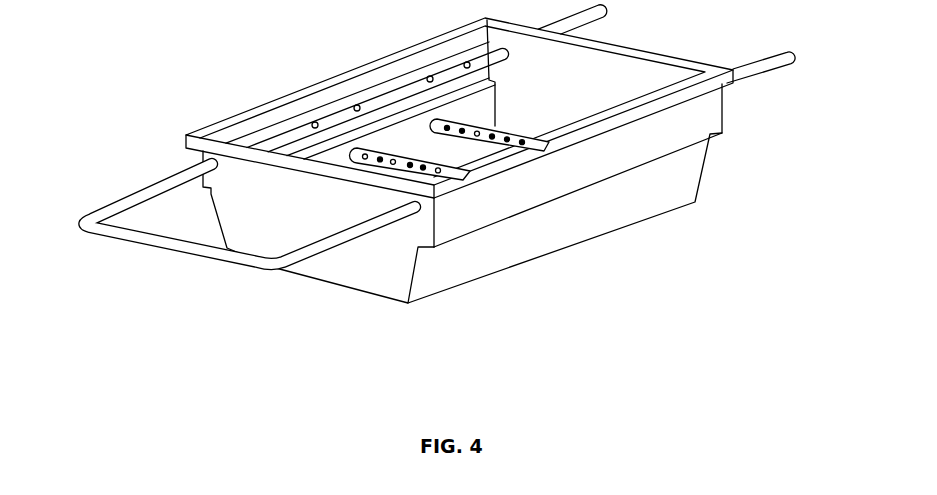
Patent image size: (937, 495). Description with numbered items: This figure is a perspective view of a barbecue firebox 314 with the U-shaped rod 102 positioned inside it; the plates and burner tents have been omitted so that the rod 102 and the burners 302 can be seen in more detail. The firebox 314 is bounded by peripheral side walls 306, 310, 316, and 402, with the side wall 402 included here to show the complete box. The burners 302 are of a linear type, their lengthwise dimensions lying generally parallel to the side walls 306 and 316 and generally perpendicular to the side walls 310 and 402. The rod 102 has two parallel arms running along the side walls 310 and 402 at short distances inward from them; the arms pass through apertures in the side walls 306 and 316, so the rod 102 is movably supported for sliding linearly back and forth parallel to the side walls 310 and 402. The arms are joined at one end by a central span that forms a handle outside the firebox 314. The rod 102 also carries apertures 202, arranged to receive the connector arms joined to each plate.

The U-shaped rod 102 is at (134, 239).
The apertures 202 is at (313, 122).
The burners 302 is at (395, 162).
The side wall 306 is at (318, 227).
The side wall 310 is at (392, 82).
The barbecue firebox 314 is at (721, 229).
The side wall 316 is at (459, 101).
The side wall 402 is at (565, 193).